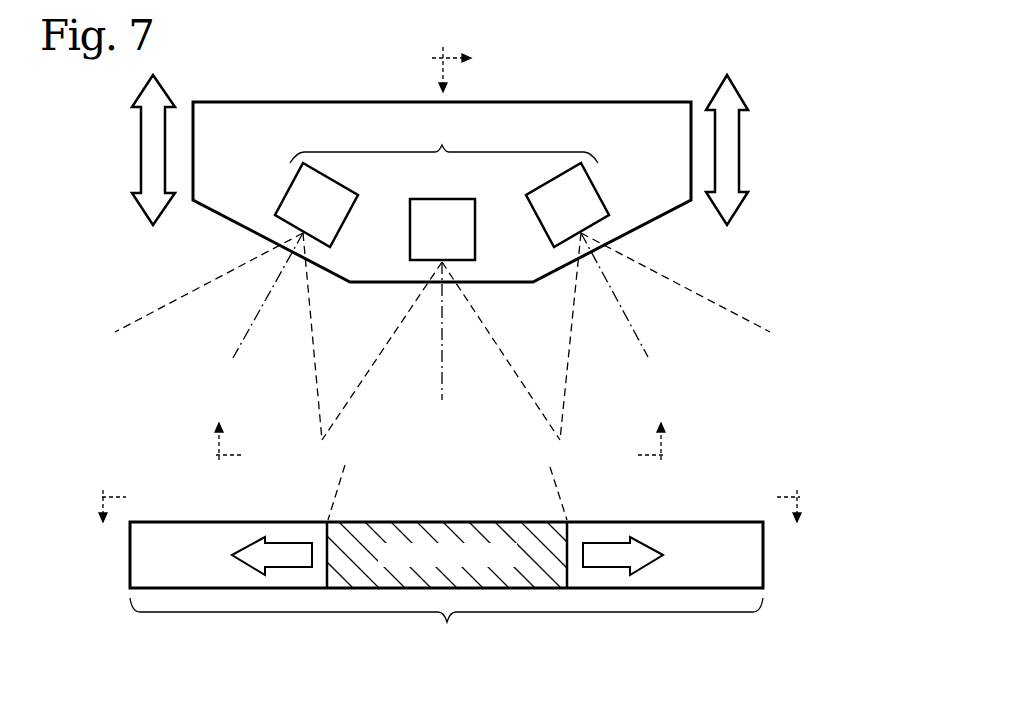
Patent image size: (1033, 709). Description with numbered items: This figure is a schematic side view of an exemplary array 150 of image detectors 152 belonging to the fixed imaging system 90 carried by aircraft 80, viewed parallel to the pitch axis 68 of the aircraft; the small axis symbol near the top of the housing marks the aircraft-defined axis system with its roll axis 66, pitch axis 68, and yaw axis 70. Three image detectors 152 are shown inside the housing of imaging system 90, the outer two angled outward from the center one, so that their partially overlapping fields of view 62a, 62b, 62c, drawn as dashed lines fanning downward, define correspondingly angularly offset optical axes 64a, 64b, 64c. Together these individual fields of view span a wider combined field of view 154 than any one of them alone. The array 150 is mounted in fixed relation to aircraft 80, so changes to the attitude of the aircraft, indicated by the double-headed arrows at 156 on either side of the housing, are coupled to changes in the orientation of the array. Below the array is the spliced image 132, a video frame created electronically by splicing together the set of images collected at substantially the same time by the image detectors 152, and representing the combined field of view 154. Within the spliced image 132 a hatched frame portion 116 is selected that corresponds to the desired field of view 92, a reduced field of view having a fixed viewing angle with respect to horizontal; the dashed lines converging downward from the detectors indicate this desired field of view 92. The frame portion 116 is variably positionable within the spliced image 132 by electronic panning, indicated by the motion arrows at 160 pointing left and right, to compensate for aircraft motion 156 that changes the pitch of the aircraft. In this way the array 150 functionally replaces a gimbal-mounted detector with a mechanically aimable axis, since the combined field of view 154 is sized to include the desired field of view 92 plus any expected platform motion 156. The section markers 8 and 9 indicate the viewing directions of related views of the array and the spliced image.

The roll axis 66 is at (455, 62).
The pitch axis 68 is at (444, 56).
The yaw axis 70 is at (441, 70).
The aircraft 80 is at (576, 52).
The imaging system 90 is at (577, 95).
The array of image detectors 150 is at (563, 145).
The image detectors 152 is at (298, 216).
The combined field of view 154 is at (181, 276).
The aircraft attitude changes 156 is at (140, 140).
The field of view 62a is at (153, 308).
The field of view 62b is at (399, 322).
The field of view 62c is at (569, 322).
The optical axis 64a is at (254, 323).
The optical axis 64b is at (443, 362).
The optical axis 64c is at (631, 323).
The desired field of view 92 is at (552, 466).
The spliced image 132 is at (193, 522).
The frame portion 116 is at (373, 530).
The motion arrows 160 is at (280, 542).
The section line 8 is at (439, 429).
The section line 9 is at (449, 525).